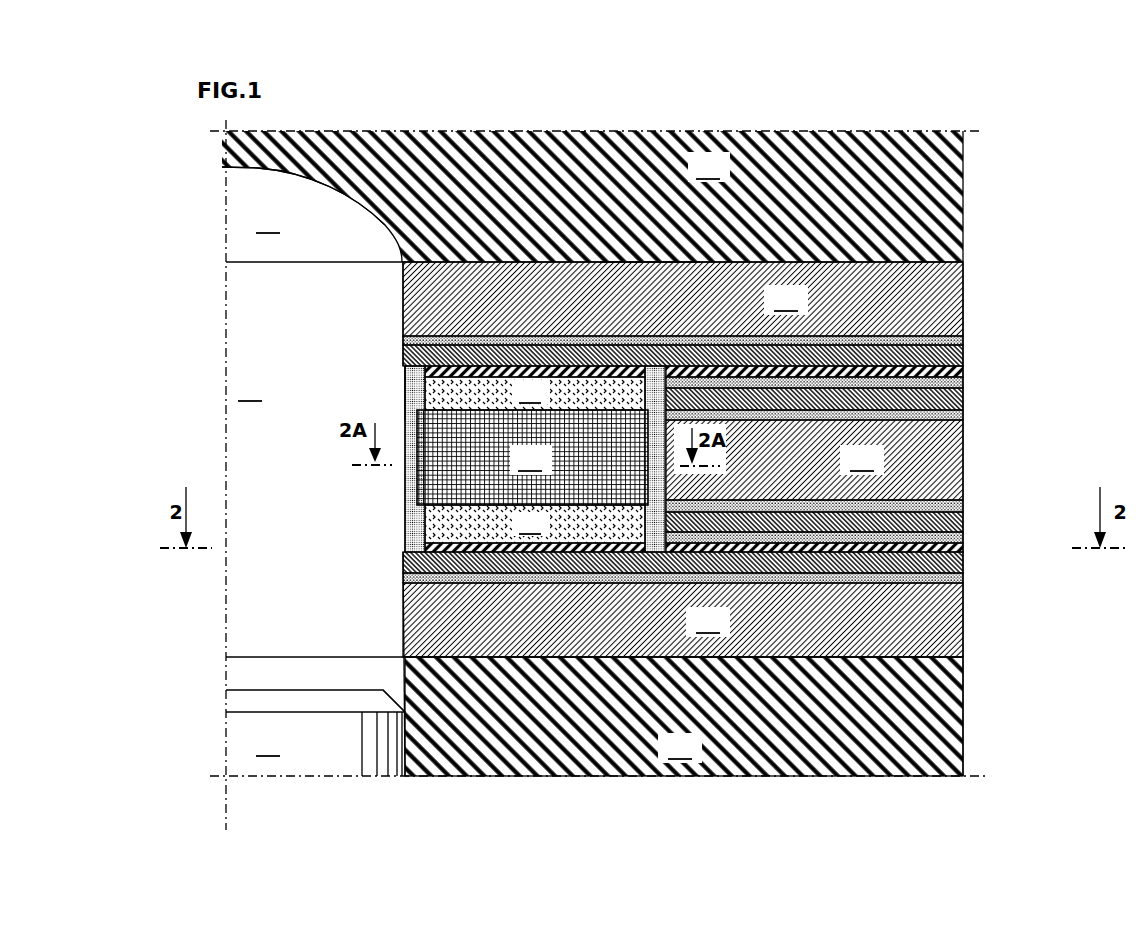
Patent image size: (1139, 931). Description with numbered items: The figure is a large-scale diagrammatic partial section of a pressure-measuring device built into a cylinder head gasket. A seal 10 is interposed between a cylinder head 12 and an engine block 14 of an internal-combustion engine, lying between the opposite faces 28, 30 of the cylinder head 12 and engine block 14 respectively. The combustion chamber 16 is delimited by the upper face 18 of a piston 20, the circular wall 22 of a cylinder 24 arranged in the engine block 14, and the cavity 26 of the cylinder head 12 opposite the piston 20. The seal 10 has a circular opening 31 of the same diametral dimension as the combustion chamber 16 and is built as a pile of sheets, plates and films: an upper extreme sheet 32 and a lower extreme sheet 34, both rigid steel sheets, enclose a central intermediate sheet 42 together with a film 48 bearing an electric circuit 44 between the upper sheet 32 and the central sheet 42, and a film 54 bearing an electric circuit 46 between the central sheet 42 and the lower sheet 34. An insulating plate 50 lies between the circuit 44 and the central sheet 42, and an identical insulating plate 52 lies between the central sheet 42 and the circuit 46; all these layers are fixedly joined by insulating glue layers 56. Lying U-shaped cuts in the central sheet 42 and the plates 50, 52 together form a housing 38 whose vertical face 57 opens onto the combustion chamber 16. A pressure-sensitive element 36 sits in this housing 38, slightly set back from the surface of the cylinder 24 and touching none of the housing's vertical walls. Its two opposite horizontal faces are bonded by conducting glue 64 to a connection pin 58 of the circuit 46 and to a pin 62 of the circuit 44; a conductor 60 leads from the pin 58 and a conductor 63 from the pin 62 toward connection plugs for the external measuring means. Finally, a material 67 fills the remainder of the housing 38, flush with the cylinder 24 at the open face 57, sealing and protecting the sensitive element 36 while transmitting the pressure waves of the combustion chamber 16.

The seal 10 is at (982, 280).
The cylinder head 12 is at (592, 453).
The engine block 14 is at (684, 716).
The combustion chamber 16 is at (314, 214).
The upper face of the piston 18 is at (265, 695).
The piston 20 is at (315, 744).
The circular wall of the cylinder 22 is at (395, 685).
The cylinder 24 is at (418, 722).
The cavity of the cylinder head 26 is at (308, 190).
The face of the cylinder head 28 is at (627, 275).
The face of the engine block 30 is at (845, 640).
The circular opening 31 is at (314, 459).
The upper extreme sheet 32 is at (683, 299).
The lower extreme sheet 34 is at (683, 620).
The sensitive element 36 is at (532, 457).
The housing 38 is at (396, 504).
The central intermediate sheet 42 is at (814, 460).
The electric circuit 44 is at (965, 366).
The electric circuit 46 is at (922, 556).
The film 48 is at (892, 365).
The insulating plate 50 is at (965, 401).
The insulating plate 52 is at (965, 528).
The film 54 is at (965, 562).
The glue layers 56 is at (828, 345).
The vertical face 57 is at (405, 470).
The connection pin 58 is at (553, 552).
The conductor 60 is at (792, 575).
The pin 62 is at (523, 366).
The conductor 63 is at (741, 362).
The conducting glue 64 is at (535, 460).
The material 67 is at (405, 389).